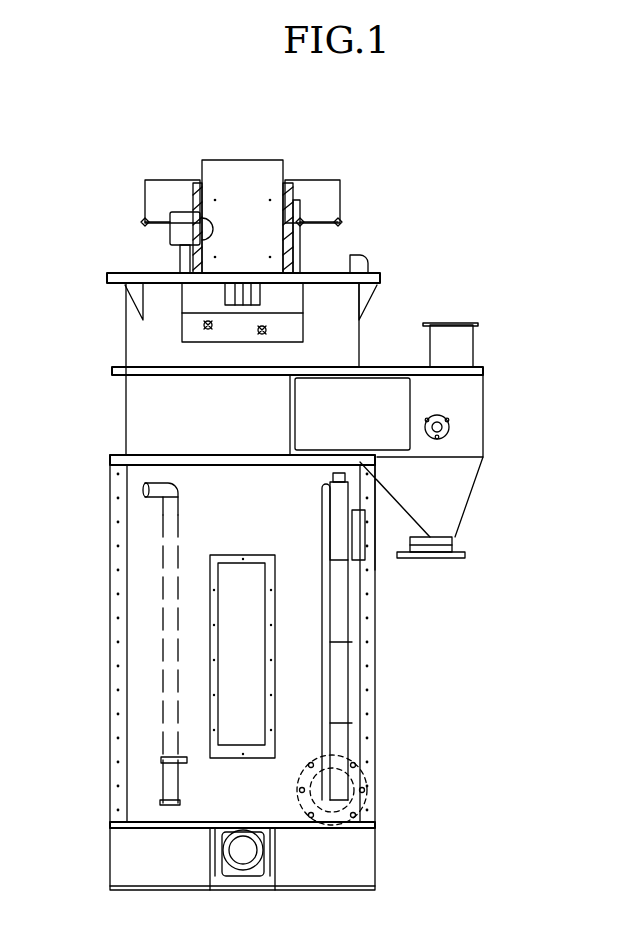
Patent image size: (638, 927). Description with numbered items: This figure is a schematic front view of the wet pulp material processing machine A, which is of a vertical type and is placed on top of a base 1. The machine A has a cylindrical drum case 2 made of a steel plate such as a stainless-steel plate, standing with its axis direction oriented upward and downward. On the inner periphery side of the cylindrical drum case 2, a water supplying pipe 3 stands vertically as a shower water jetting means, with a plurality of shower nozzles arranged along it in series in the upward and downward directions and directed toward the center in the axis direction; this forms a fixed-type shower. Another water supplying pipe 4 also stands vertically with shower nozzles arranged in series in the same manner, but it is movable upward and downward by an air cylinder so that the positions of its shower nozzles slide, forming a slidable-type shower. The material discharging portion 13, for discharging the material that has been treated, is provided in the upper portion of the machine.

The wet pulp material processing machine A is at (403, 150).
The base 1 is at (133, 866).
The cylindrical drum case 2 is at (137, 528).
The water supplying pipe 3 is at (167, 590).
The water supplying pipe 4 is at (340, 592).
The material discharging portion 13 is at (472, 492).